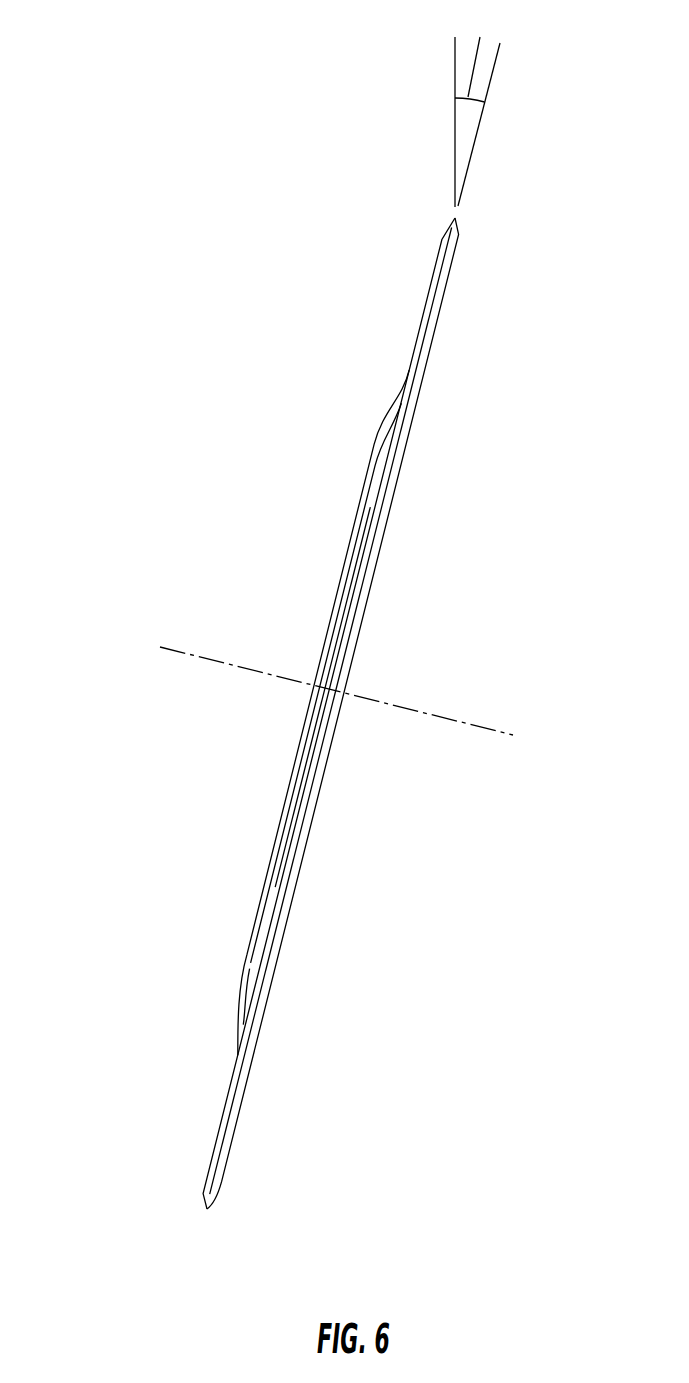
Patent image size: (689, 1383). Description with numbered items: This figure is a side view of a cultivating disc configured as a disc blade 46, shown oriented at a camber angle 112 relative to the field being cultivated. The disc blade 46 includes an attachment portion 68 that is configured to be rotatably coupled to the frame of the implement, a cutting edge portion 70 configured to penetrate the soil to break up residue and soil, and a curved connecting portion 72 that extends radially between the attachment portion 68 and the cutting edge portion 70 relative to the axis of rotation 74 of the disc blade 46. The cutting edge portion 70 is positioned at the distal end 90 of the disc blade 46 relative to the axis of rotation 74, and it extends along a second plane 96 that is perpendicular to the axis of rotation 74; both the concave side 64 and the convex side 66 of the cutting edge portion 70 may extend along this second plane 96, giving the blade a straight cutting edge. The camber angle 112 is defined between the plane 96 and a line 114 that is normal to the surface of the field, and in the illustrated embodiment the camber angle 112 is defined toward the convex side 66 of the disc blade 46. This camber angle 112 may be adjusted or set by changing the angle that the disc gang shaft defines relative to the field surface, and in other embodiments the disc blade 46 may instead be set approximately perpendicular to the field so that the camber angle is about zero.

The disc blade 46 is at (132, 192).
The concave side 64 is at (321, 737).
The convex side 66 is at (331, 737).
The attachment portion 68 is at (328, 625).
The cutting edge portion 70 is at (427, 300).
The curved connecting portion 72 is at (370, 453).
The axis of rotation 74 is at (443, 717).
The distal end 90 is at (207, 1210).
The second plane 96 is at (480, 128).
The camber angle 112 is at (479, 55).
The line normal to the surface of the field 114 is at (455, 75).